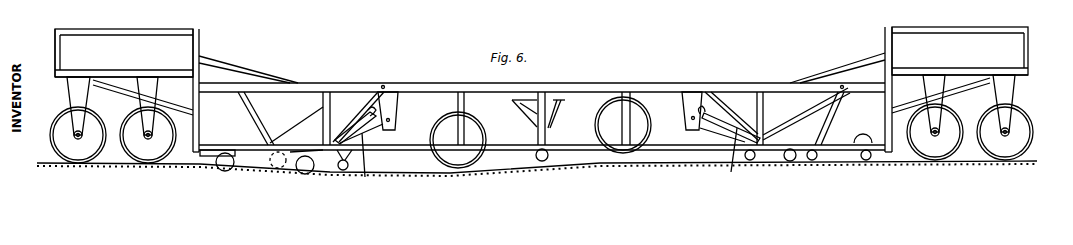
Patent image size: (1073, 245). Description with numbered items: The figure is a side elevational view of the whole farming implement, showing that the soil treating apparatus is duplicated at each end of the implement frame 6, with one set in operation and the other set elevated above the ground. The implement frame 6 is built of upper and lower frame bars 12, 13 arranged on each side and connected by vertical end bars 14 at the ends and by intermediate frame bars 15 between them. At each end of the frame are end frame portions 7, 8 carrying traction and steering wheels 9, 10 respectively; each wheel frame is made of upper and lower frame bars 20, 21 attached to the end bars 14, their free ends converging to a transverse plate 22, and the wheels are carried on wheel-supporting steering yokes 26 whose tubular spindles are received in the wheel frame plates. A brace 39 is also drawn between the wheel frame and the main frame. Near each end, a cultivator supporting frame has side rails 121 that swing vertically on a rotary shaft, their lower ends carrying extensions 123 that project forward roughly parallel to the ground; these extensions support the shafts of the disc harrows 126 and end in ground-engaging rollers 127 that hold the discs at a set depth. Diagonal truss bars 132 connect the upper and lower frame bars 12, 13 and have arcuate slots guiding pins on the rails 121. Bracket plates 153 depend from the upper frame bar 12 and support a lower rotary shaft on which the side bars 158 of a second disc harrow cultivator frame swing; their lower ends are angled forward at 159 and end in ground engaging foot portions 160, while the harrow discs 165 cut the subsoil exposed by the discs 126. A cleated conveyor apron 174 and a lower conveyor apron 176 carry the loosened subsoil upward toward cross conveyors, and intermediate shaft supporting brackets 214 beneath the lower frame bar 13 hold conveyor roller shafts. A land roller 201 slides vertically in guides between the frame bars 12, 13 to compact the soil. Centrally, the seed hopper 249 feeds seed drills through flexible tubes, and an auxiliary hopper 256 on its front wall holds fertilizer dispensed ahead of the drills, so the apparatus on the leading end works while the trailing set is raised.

The implement frame 6 is at (542, 124).
The end frame portion 7 is at (140, 28).
The end frame portion 8 is at (970, 26).
The traction and steering wheels 9 is at (56, 118).
The traction and steering wheels 10 is at (959, 114).
The upper frame bar 12 is at (421, 83).
The lower frame bar 13 is at (579, 150).
The vertical end bar 14 is at (199, 118).
The intermediate frame bar 15 is at (323, 133).
The upper frame bar 20 is at (93, 32).
The lower frame bar 21 is at (100, 72).
The transverse plate 22 is at (55, 60).
The wheel-supporting steering yoke 26 is at (68, 90).
The brace 39 is at (225, 68).
The side rail 121 is at (338, 104).
The extension 123 is at (213, 160).
The disc harrow 126 is at (230, 168).
The ground-engaging roller 127 is at (208, 160).
The truss bar 132 is at (258, 120).
The bracket plate 153 is at (398, 105).
The side bar 158 is at (551, 161).
The angled lower end 159 is at (303, 175).
The ground engaging foot portion 160 is at (275, 168).
The harrow disc 165 is at (788, 128).
The conveyor apron 174 is at (360, 125).
The lower conveyor apron 176 is at (380, 146).
The land roller 201 is at (431, 134).
The intermediate shaft supporting bracket 214 is at (464, 102).
The seed hopper 249 is at (563, 114).
The auxiliary hopper 256 is at (518, 113).